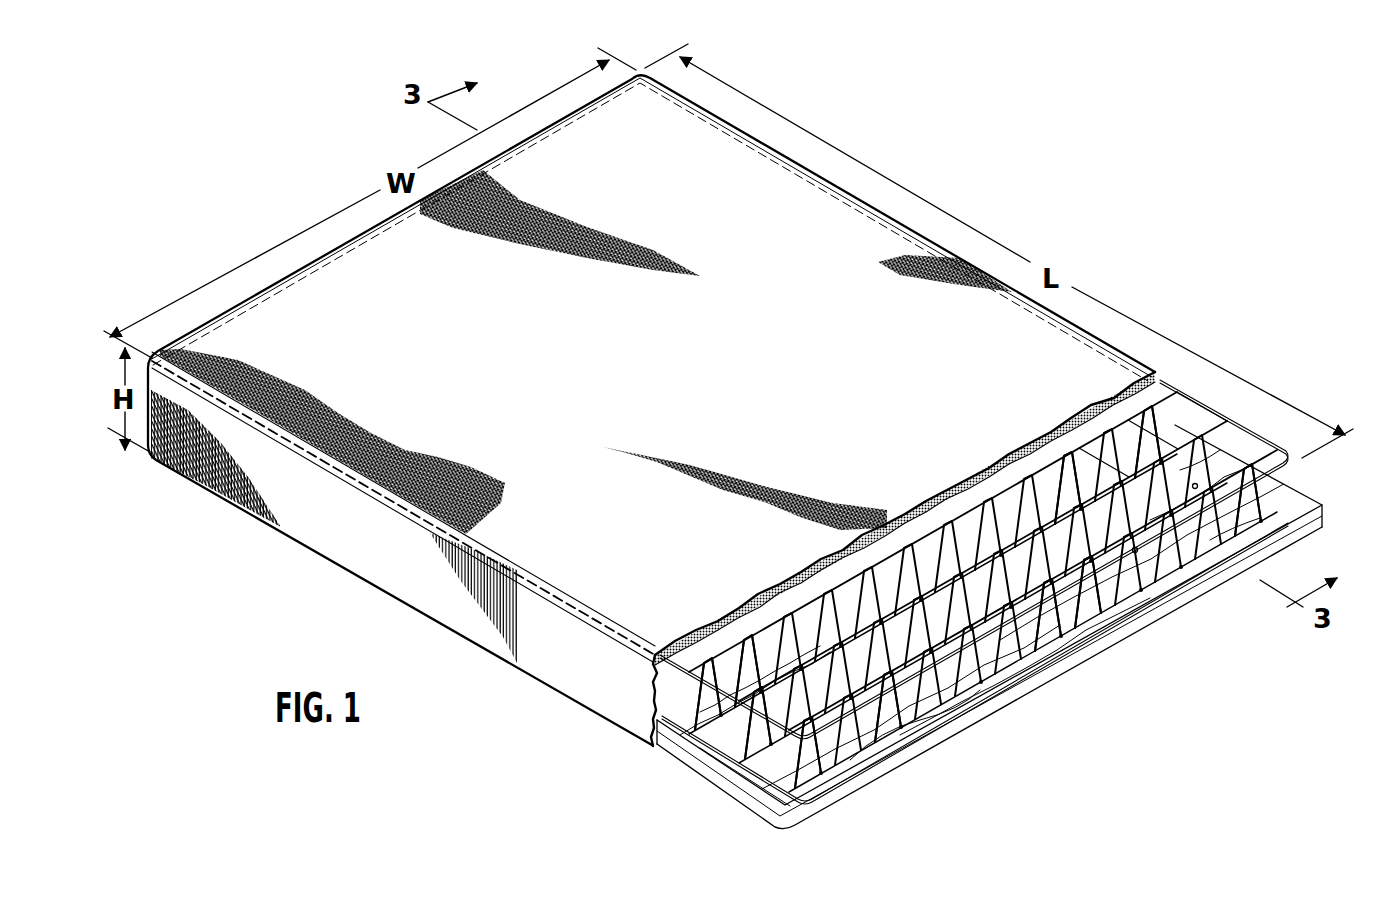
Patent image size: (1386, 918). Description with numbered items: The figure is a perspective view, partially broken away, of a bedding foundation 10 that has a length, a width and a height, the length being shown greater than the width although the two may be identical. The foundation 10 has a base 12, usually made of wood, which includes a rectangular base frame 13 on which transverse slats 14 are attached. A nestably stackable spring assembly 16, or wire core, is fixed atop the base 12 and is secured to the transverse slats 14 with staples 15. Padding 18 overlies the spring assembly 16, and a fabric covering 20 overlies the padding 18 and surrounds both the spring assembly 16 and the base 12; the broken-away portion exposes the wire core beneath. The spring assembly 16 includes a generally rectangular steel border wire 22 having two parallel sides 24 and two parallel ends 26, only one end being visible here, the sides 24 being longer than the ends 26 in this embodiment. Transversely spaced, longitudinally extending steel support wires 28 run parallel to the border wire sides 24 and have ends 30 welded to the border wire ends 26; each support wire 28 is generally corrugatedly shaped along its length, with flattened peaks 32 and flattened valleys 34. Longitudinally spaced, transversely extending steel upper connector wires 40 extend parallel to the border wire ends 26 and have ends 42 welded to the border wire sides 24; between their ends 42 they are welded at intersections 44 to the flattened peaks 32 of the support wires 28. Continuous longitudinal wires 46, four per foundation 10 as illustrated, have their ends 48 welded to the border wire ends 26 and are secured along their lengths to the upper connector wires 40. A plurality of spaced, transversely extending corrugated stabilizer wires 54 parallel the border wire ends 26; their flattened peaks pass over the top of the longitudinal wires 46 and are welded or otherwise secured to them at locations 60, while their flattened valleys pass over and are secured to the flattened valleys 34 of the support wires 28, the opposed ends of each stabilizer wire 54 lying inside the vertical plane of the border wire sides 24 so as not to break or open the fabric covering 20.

The bedding foundation 10 is at (1021, 163).
The base 12 is at (972, 636).
The rectangular base frame 13 is at (690, 778).
The transverse slats 14 is at (682, 740).
The staples 15 is at (884, 754).
The nestably stackable spring assembly 16 is at (968, 575).
The padding 18 is at (1006, 448).
The fabric covering 20 is at (712, 331).
The border wire 22 is at (1268, 435).
The border wire sides 24 is at (1175, 378).
The border wire ends 26 is at (1022, 625).
The support wires 28 is at (1280, 490).
The ends of support wires 30 is at (1288, 472).
The peaks 32 is at (977, 528).
The valleys 34 is at (657, 720).
The upper connector wires 40 is at (1076, 474).
The ends of upper connector wires 42 is at (1215, 422).
The intersections 44 is at (940, 552).
The longitudinal wires 46 is at (1195, 488).
The ends of longitudinal wires 48 is at (967, 657).
The stabilizer wires 54 is at (740, 650).
The locations 60 is at (737, 650).